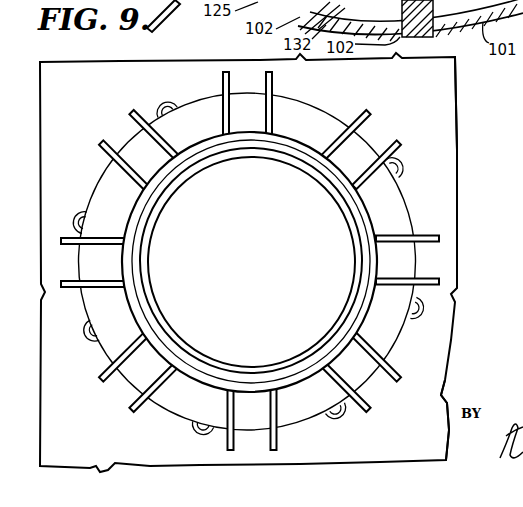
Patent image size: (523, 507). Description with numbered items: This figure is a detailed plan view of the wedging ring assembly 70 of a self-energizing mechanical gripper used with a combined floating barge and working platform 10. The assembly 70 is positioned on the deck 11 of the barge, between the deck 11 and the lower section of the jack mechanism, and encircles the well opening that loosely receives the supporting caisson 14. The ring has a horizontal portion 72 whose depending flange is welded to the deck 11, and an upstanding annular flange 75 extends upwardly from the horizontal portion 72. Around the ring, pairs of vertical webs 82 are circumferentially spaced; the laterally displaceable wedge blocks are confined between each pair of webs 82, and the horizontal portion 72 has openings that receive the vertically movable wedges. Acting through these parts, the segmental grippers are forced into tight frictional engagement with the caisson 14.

The combined floating barge and working platform 10 is at (449, 392).
The deck 11 is at (443, 139).
The caisson 14 is at (151, 204).
The wedging ring assembly 70 is at (416, 204).
The horizontal portion 72 is at (318, 126).
The upstanding annular flange 75 is at (373, 263).
The vertical webs 82 is at (367, 118).